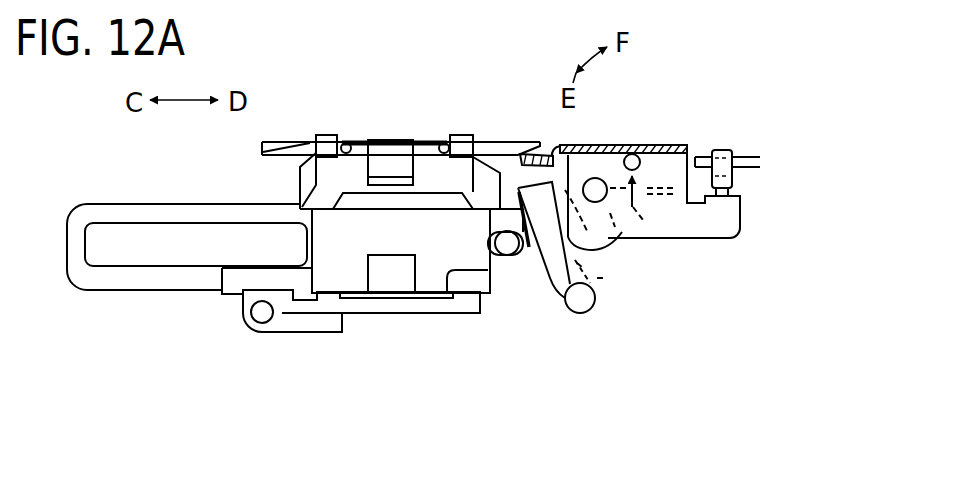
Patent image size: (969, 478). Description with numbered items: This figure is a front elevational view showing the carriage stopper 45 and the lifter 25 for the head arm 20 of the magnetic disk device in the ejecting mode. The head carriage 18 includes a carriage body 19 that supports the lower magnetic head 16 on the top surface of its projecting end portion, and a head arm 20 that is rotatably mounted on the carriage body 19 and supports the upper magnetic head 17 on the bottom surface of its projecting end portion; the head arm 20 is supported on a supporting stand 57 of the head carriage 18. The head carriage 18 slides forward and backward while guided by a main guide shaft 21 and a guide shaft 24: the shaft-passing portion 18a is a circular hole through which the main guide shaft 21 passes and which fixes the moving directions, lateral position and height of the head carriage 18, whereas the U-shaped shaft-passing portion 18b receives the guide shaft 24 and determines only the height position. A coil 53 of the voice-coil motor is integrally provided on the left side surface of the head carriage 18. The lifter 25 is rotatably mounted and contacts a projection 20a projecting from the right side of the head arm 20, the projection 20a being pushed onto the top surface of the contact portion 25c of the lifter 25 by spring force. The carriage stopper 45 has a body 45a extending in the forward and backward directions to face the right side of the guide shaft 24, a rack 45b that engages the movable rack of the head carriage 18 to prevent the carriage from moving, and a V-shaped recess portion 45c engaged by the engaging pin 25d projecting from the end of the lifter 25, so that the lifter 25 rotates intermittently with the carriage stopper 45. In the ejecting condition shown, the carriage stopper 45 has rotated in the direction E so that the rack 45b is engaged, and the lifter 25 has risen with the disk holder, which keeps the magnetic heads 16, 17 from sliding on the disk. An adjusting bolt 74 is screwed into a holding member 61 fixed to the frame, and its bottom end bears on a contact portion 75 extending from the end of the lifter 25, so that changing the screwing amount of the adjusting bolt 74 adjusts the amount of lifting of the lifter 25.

The lower magnetic head 16 is at (400, 277).
The upper magnetic head 17 is at (367, 140).
The head carriage 18 is at (378, 316).
The shaft-passing portion 18a is at (290, 318).
The shaft-passing portion 18b is at (527, 268).
The carriage body 19 is at (448, 305).
The head arm 20 is at (418, 140).
The projection 20a is at (507, 150).
The main guide shaft 21 is at (246, 313).
The guide shaft 24 is at (500, 255).
The lifter 25 is at (665, 147).
The contact portion 25c is at (548, 150).
The engaging pin 25d is at (597, 178).
The carriage stopper 45 is at (597, 243).
The body 45a is at (550, 288).
The rack 45b is at (518, 190).
The V-shaped recess portion 45c is at (600, 280).
The coil 53 is at (190, 210).
The supporting stand 57 is at (353, 258).
The holding member 61 is at (760, 163).
The adjusting bolt 74 is at (722, 150).
The contact portion 75 is at (745, 203).